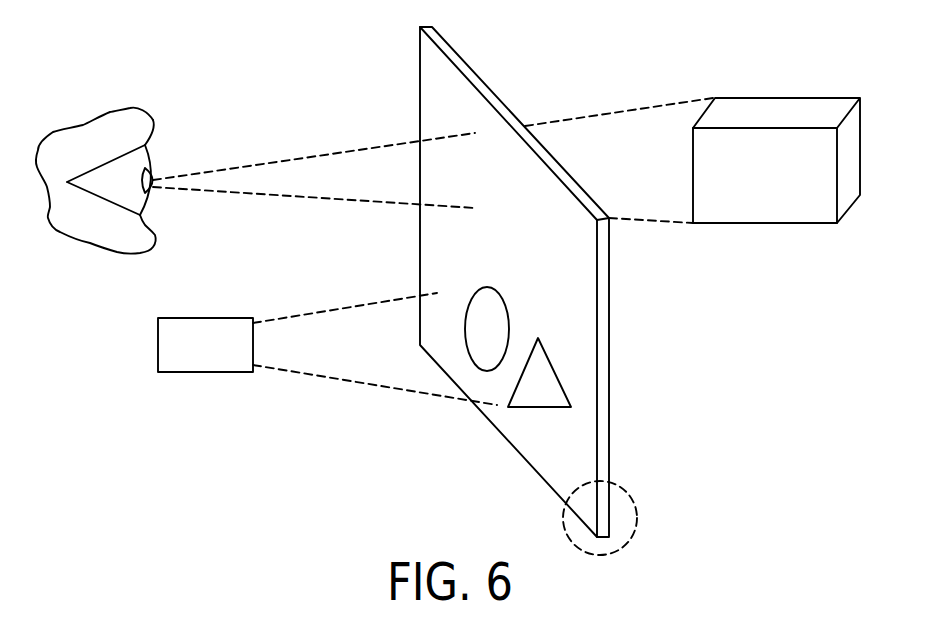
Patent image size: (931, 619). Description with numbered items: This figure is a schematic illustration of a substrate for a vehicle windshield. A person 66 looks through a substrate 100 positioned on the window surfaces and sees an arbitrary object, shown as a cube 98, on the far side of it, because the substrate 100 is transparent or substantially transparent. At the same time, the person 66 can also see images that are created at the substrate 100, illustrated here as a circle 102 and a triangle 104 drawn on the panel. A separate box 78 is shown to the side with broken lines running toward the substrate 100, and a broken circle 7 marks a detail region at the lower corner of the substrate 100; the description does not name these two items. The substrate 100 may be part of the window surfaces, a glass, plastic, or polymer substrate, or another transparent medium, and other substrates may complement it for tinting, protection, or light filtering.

The person 66 is at (123, 125).
The substrate 100 is at (475, 82).
The cube 98 is at (781, 187).
The projector / display source 78 is at (221, 356).
The circle 102 is at (478, 328).
The triangle 104 is at (538, 397).
The detail region of FIG. 7 is at (627, 490).